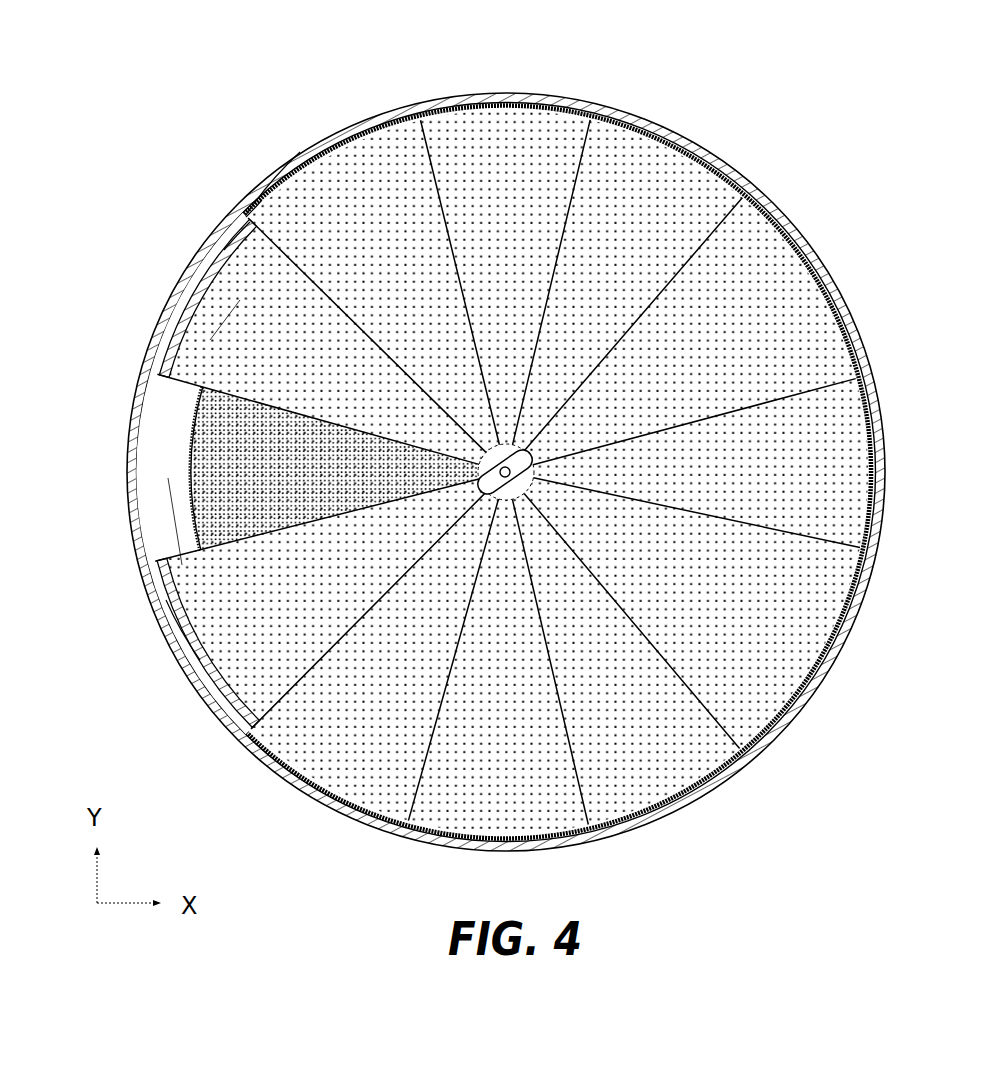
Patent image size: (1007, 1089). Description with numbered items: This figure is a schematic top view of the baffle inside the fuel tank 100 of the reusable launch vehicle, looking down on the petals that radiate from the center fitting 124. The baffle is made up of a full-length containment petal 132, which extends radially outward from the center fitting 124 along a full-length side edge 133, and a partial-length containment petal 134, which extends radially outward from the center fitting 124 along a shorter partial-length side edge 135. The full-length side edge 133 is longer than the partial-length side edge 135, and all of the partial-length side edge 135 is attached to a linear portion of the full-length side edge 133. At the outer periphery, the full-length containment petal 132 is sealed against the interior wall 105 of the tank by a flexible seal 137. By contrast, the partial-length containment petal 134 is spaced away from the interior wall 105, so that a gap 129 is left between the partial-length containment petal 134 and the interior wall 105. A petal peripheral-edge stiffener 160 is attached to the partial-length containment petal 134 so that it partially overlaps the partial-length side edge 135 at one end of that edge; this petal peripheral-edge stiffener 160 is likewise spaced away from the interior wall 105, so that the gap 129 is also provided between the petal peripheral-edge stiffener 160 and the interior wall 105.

The fuel tank 100 is at (722, 118).
The interior wall 105 is at (194, 650).
The center fitting 124 is at (514, 452).
The gap 129 is at (172, 500).
The full-length containment petal 132 is at (362, 152).
The full-length side edge 133 is at (222, 250).
The partial-length containment petal 134 is at (220, 302).
The partial-length side edge 135 is at (262, 200).
The flexible seal 137 is at (300, 150).
The petal peripheral-edge stiffener 160 is at (215, 345).